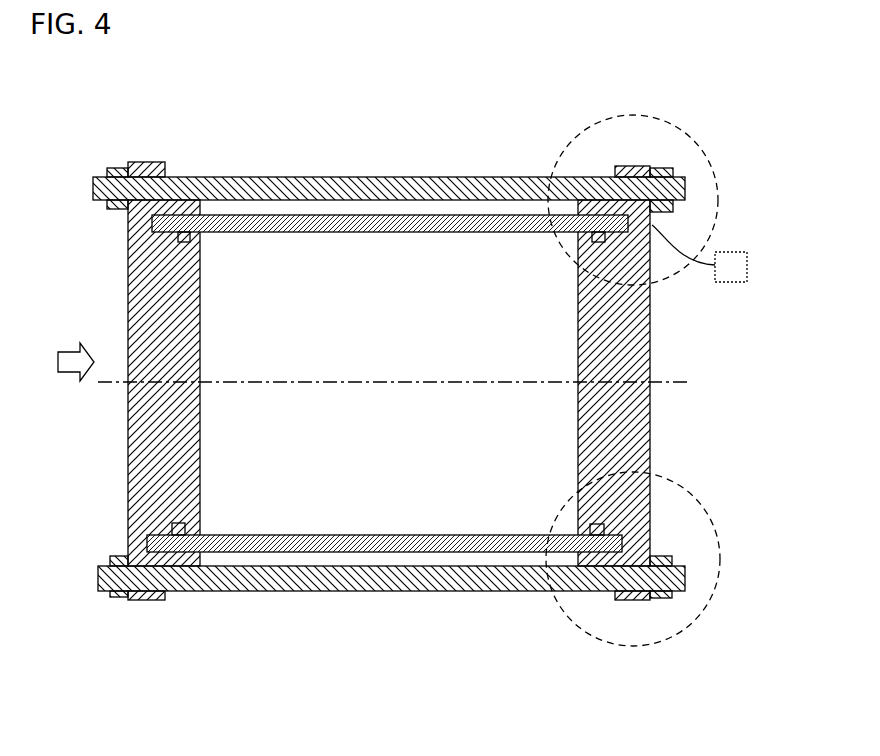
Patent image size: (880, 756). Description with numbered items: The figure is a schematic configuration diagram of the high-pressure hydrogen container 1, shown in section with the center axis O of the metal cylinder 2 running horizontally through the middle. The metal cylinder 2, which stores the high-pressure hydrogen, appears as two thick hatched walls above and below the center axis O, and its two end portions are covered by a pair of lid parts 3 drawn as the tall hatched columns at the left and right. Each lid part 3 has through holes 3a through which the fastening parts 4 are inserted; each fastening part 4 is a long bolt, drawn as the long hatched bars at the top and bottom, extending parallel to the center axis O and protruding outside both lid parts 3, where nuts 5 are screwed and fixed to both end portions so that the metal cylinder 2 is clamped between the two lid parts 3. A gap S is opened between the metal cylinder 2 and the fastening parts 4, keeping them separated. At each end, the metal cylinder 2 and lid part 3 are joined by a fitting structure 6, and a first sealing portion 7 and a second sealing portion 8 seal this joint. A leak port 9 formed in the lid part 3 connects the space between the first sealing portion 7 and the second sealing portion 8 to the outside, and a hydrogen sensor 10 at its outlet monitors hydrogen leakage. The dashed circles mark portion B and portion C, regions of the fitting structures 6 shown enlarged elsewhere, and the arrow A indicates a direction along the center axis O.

The high-pressure hydrogen container 1 is at (450, 148).
The metal cylinder 2 is at (275, 232).
The lid part 3 is at (128, 445).
The through hole 3a is at (152, 165).
The fastening part 4 is at (318, 177).
The nut 5 is at (108, 170).
The fitting structure 6 is at (222, 256).
The first sealing portion 7 is at (200, 502).
The second sealing portion 8 is at (127, 528).
The leak port 9 is at (652, 247).
The hydrogen sensor 10 is at (731, 282).
The flow direction A is at (61, 362).
The portion B is at (718, 200).
The enlarged region C is at (718, 560).
The center axis O is at (404, 384).
The gap S is at (393, 203).